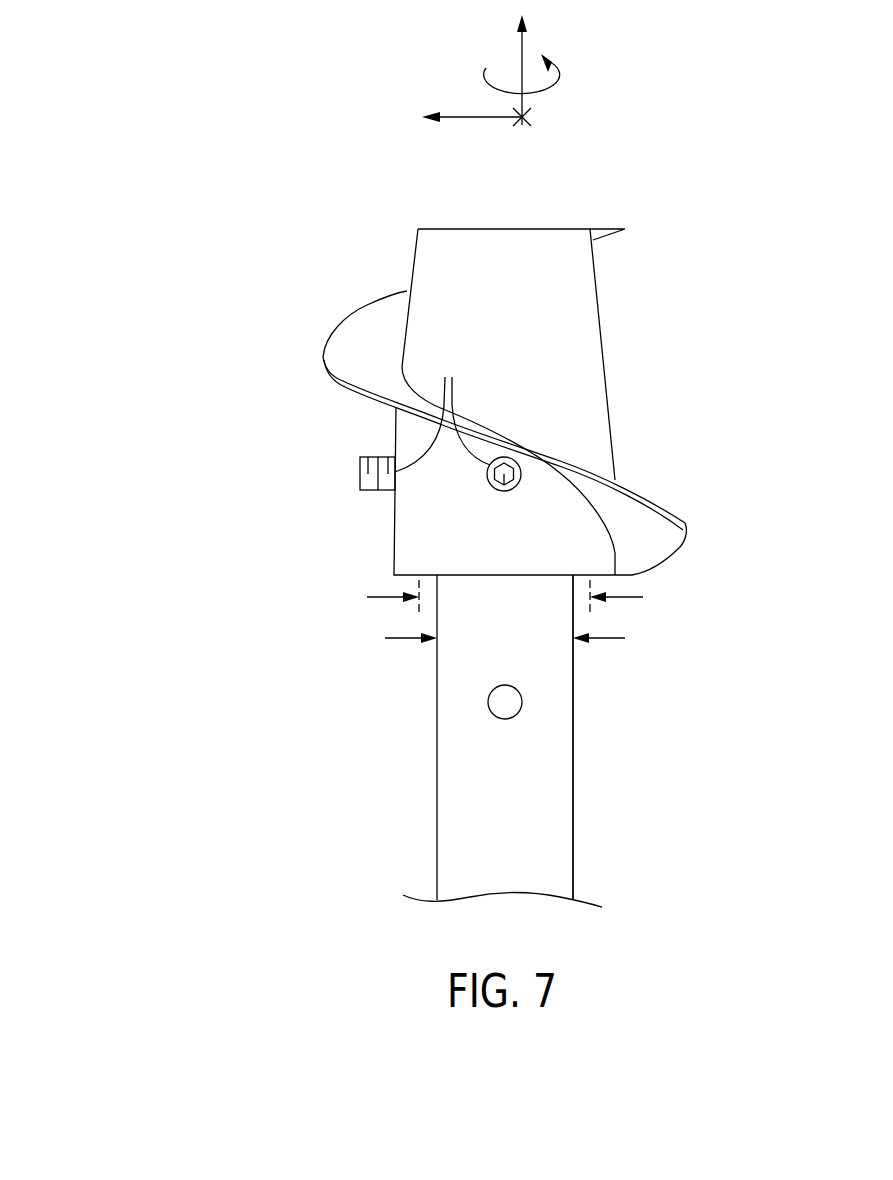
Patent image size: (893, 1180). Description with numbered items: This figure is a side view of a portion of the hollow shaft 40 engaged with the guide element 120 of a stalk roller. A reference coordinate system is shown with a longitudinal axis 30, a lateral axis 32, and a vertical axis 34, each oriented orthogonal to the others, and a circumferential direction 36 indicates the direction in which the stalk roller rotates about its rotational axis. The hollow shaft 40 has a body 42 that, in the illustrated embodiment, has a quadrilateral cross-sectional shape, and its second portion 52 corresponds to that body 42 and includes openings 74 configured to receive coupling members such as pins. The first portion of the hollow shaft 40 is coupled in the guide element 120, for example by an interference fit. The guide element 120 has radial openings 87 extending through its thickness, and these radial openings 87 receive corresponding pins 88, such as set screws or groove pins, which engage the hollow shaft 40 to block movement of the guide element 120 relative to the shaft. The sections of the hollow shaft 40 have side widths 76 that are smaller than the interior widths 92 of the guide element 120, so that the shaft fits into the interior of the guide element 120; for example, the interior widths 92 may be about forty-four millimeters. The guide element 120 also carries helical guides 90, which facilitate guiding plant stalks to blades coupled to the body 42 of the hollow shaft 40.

The longitudinal axis 30 is at (522, 57).
The lateral axis 32 is at (526, 124).
The vertical axis 34 is at (477, 117).
The circumferential direction 36 is at (551, 87).
The hollow shaft 40 is at (195, 272).
The guide element 120 is at (603, 330).
The helical guides 90 is at (363, 330).
The radial openings 87 is at (442, 407).
The pins 88 is at (360, 470).
The interior widths 92 is at (622, 597).
The widths 76 is at (605, 638).
The openings 74 is at (506, 719).
The second portion 52 is at (573, 773).
The body 42 is at (573, 838).